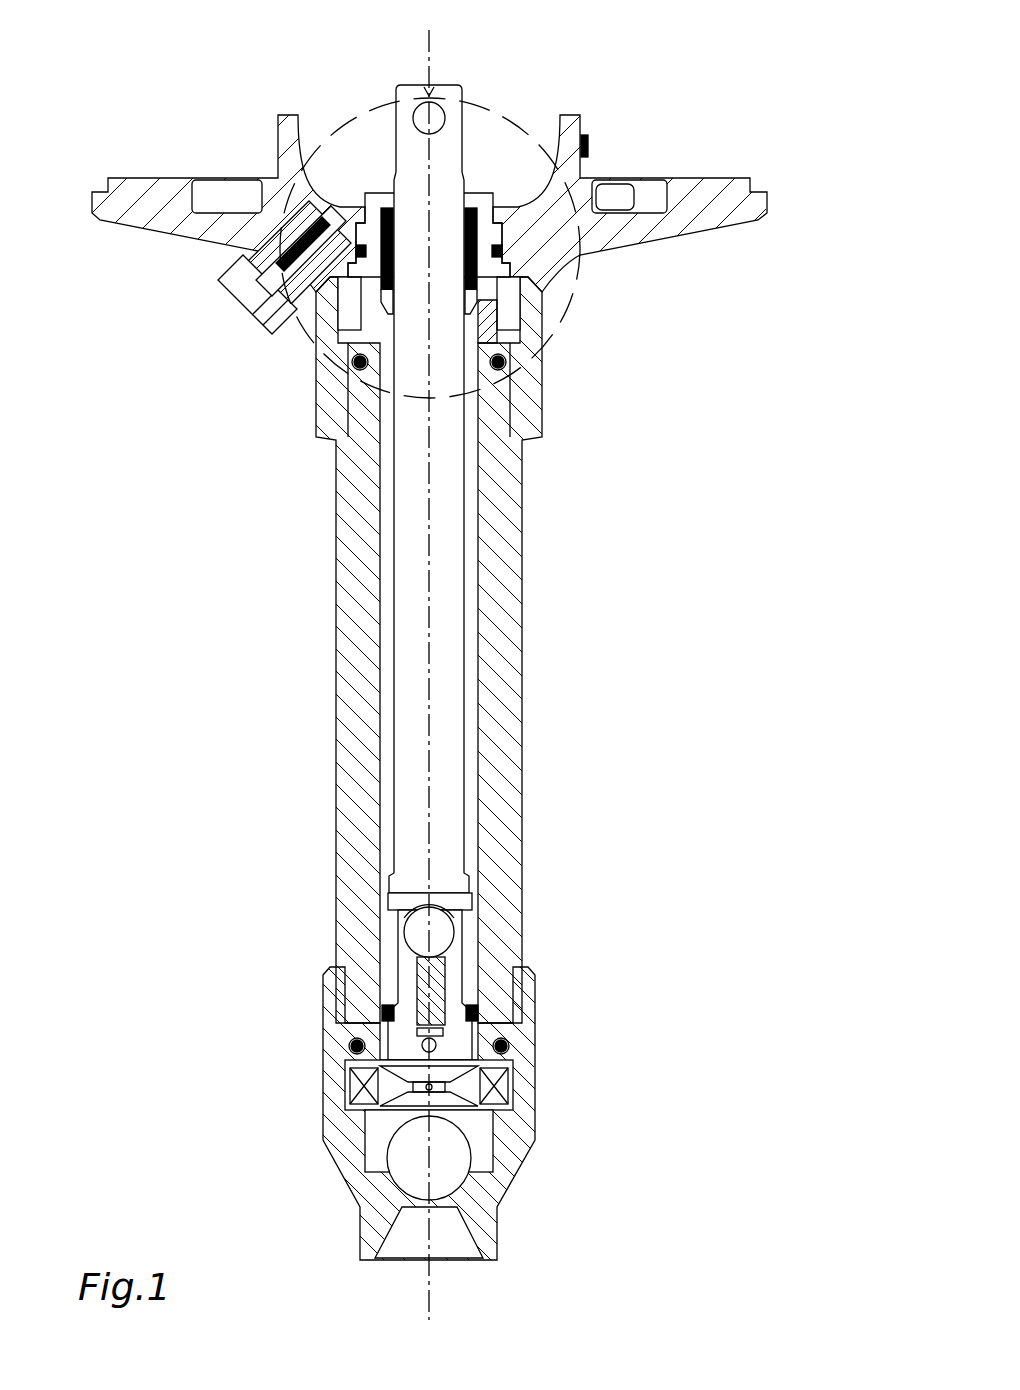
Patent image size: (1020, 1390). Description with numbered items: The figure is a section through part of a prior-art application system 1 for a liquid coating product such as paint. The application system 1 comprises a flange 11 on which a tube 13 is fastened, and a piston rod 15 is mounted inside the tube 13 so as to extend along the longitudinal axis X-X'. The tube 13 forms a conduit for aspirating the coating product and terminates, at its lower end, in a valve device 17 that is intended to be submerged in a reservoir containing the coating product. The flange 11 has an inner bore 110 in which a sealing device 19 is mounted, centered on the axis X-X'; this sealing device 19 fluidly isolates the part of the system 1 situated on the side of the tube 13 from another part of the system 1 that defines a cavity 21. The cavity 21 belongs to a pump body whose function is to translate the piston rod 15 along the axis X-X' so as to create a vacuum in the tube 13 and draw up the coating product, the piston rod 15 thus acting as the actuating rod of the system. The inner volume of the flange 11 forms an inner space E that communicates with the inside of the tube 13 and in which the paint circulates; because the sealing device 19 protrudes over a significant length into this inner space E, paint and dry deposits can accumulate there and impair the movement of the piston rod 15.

The application system 1 is at (645, 405).
The flange 11 is at (700, 188).
The tube 13 is at (500, 598).
The piston rod 15 is at (443, 515).
The valve device 17 is at (525, 1077).
The sealing device 19 is at (473, 268).
The cavity 21 is at (480, 160).
The inner bore 110 is at (372, 230).
The inner space E is at (355, 312).